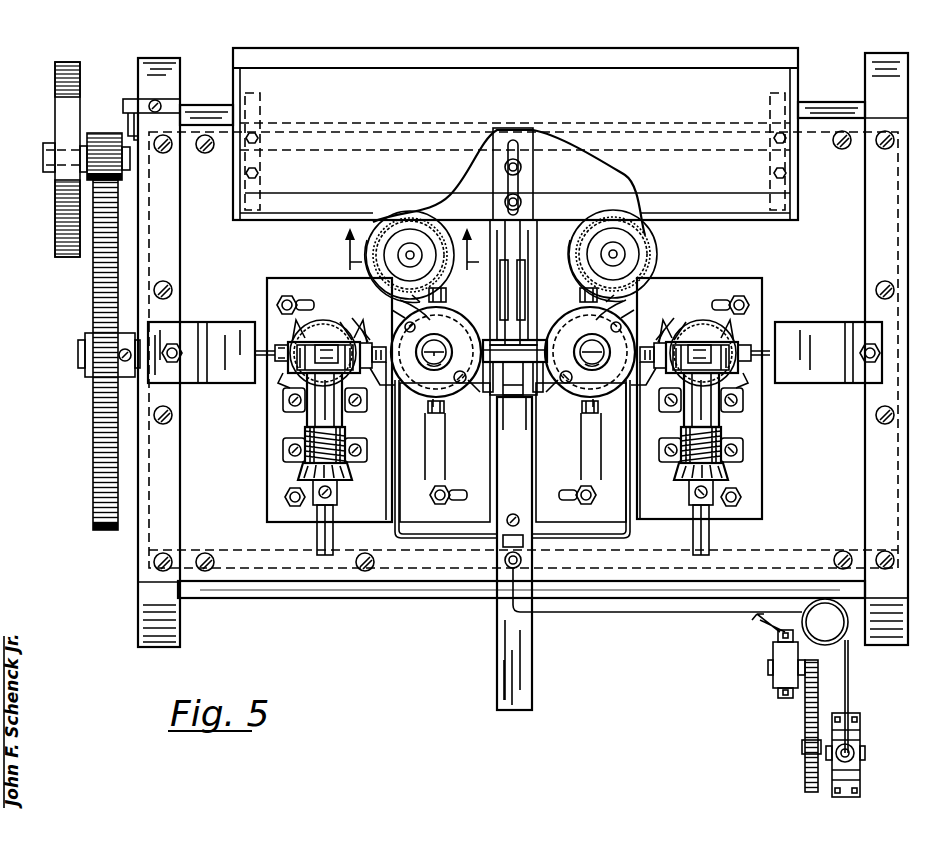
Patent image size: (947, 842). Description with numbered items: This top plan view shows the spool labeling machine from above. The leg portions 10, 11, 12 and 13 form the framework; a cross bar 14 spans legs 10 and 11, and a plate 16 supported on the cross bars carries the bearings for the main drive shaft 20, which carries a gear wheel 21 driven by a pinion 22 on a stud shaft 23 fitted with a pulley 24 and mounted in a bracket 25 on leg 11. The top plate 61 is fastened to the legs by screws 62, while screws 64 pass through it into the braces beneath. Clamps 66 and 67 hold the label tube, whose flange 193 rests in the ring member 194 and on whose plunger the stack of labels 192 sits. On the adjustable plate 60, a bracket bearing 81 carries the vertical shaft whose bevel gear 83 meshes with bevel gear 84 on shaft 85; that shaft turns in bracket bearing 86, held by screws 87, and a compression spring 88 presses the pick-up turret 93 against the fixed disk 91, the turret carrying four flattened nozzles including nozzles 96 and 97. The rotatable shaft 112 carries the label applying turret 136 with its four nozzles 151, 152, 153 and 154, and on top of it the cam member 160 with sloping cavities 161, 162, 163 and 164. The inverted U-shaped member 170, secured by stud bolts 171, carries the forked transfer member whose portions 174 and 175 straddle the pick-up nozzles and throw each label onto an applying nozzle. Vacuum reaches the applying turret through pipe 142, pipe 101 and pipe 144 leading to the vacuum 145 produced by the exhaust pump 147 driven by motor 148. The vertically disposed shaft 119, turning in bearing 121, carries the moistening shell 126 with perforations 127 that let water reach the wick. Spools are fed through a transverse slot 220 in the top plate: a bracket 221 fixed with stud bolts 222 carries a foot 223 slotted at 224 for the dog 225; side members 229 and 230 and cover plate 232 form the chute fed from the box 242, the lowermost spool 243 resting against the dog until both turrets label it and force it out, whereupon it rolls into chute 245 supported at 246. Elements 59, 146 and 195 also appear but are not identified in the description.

The leg portion 10 is at (150, 600).
The leg portion 11 is at (895, 612).
The leg portion 12 is at (150, 72).
The leg portion 13 is at (900, 84).
The cross bar 14 is at (409, 257).
The plate 16 is at (198, 112).
The main drive shaft 20 is at (80, 350).
The gear wheel 21 is at (95, 436).
The pinion 22 is at (112, 138).
The stud shaft 23 is at (46, 158).
The pulley 24 is at (60, 103).
The bracket 25 is at (125, 104).
The dial 59 is at (326, 322).
The adjustable plate 60 is at (270, 278).
The top plate 61 is at (198, 128).
The screws 62 is at (895, 142).
The screws 64 is at (210, 553).
The clamp 66 is at (292, 340).
The clamp 67 is at (519, 324).
The bracket bearing 81 is at (360, 446).
The bevel gear 83 is at (330, 436).
The bevel gear 84 is at (340, 470).
The shaft 85 is at (334, 512).
The bracket bearing 86 is at (343, 415).
The screws 87 is at (288, 402).
The compression spring 88 is at (292, 442).
The disk 91 is at (270, 375).
The pick-up turret 93 is at (513, 349).
The nozzle 96 is at (282, 380).
The nozzle 97 is at (275, 350).
The pipe 101 is at (426, 424).
The rotatable shaft 112 is at (436, 340).
The vertically disposed shaft 119 is at (410, 251).
The bearing 121 is at (408, 220).
The shell member 126 is at (378, 232).
The perforations 127 is at (418, 222).
The label applying turret 136 is at (450, 358).
The pipe 142 is at (453, 377).
The pipe 144 is at (398, 478).
The vacuum 145 is at (825, 676).
The pipe 146 is at (580, 613).
The exhaust pump 147 is at (862, 758).
The motor 148 is at (770, 658).
The nozzle 151 is at (528, 344).
The nozzle 152 is at (518, 304).
The nozzle 153 is at (528, 310).
The nozzle 154 is at (440, 414).
The cam member 160 is at (428, 395).
The cavity 161 is at (452, 352).
The cavity 162 is at (522, 300).
The cavity 163 is at (412, 335).
The cavity 164 is at (515, 396).
The inverted U-shaped member 170 is at (218, 326).
The stud bolts 171 is at (172, 342).
The fork portion 174 is at (386, 392).
The fork portion 175 is at (378, 344).
The labels 192 is at (440, 290).
The flange 193 is at (514, 314).
The ring member 194 is at (790, 298).
The link 195 is at (507, 377).
The transverse slot 220 is at (493, 232).
The bracket 221 is at (536, 188).
The stud bolts 222 is at (522, 200).
The foot 223 is at (513, 395).
The slot 224 is at (486, 392).
The dog 225 is at (543, 388).
The side member 229 is at (535, 245).
The side member 230 is at (498, 250).
The cover plate 232 is at (530, 228).
The box 242 is at (334, 55).
The lowermost spool of thread 243 is at (545, 360).
The chute 245 is at (532, 455).
The support 246 is at (515, 512).